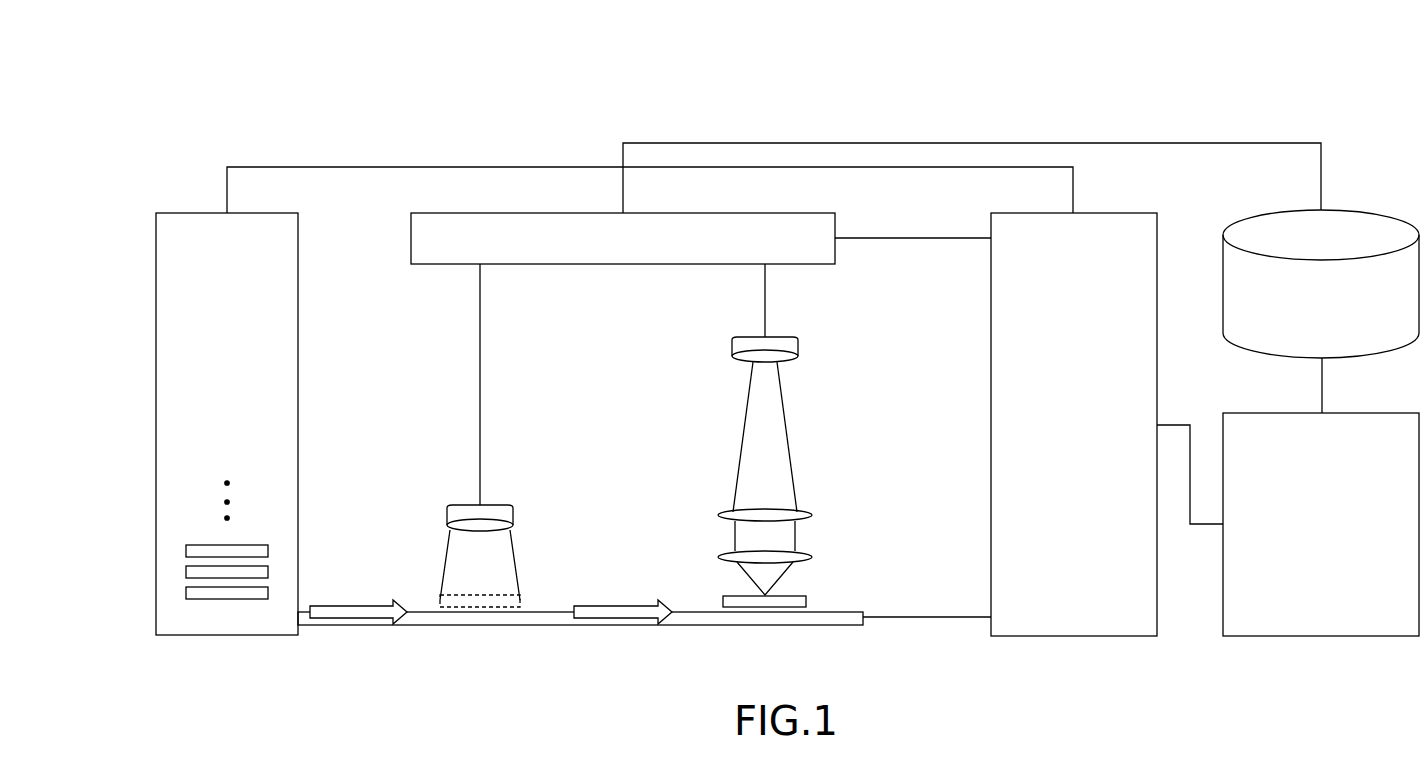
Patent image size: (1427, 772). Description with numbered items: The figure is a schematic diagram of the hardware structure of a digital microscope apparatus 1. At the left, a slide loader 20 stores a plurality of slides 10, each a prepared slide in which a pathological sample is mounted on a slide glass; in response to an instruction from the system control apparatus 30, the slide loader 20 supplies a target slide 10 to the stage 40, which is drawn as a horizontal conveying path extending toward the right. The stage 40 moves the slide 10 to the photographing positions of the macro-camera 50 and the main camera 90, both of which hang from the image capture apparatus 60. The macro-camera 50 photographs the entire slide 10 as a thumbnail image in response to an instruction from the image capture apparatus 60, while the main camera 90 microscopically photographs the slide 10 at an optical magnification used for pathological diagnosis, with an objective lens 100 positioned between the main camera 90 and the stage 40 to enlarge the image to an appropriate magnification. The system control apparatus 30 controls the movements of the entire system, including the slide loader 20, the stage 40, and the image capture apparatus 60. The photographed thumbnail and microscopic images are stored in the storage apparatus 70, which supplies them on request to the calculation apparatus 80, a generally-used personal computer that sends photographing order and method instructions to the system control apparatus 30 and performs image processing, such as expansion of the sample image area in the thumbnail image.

The digital microscope apparatus 1 is at (295, 110).
The slide 10 is at (255, 543).
The slide loader 20 is at (298, 338).
The system control apparatus 30 is at (1113, 213).
The stage 40 is at (417, 628).
The macro-camera 50 is at (498, 503).
The image capture apparatus 60 is at (770, 213).
The storage apparatus 70 is at (1355, 210).
The calculation apparatus 80 is at (1357, 413).
The main camera 90 is at (783, 332).
The objective lens 100 is at (817, 554).